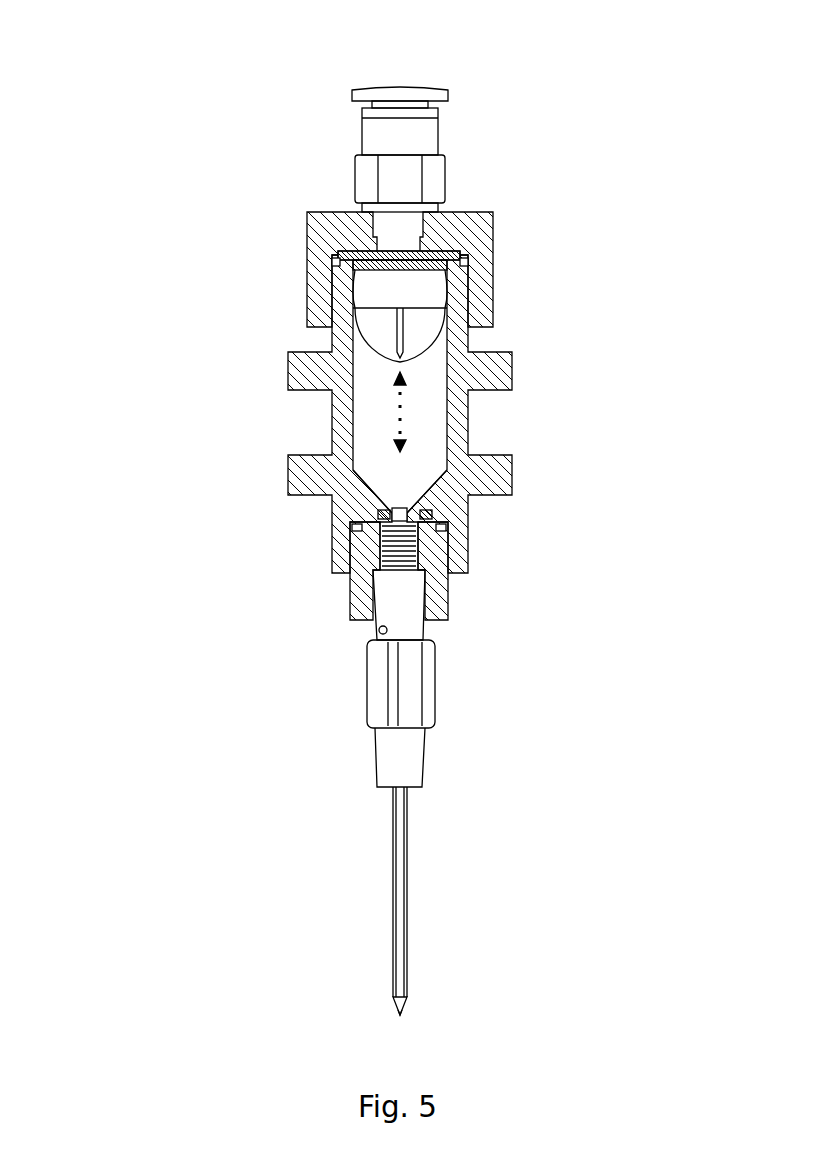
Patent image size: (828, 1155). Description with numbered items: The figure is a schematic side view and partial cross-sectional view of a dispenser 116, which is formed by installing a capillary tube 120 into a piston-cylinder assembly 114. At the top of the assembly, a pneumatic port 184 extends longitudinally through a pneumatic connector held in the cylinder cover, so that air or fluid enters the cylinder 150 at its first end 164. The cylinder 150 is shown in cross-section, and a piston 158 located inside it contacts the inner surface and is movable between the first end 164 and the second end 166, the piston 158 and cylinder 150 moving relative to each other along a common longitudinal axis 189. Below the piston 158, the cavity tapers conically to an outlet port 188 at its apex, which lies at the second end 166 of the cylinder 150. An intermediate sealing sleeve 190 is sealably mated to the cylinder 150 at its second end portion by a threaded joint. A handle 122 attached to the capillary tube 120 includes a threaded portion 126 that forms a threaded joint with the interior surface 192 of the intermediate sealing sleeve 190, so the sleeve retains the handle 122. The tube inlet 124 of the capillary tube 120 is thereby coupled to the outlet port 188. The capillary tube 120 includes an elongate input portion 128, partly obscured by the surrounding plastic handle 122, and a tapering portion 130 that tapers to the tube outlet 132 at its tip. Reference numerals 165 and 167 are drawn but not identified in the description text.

The dispenser 116 is at (205, 86).
The pneumatic port 184 is at (402, 83).
The piston-cylinder assembly 114 is at (220, 373).
The cylinder 150 is at (510, 372).
The first end 164 is at (410, 262).
The plunger 165 is at (360, 268).
The plunger tip 167 is at (392, 357).
The piston 158 is at (405, 335).
The common longitudinal axis 189 is at (385, 403).
The outlet port 188 is at (400, 508).
The tube inlet 124 is at (388, 512).
The second end 166 is at (420, 515).
The intermediate sealing sleeve 190 is at (447, 600).
The threaded portion 126 is at (378, 549).
The capillary tube 120 is at (220, 757).
The interior surface 192 is at (373, 594).
The handle 122 is at (362, 673).
The elongate input portion 128 is at (393, 855).
The tapering portion 130 is at (393, 999).
The tube outlet 132 is at (397, 1014).